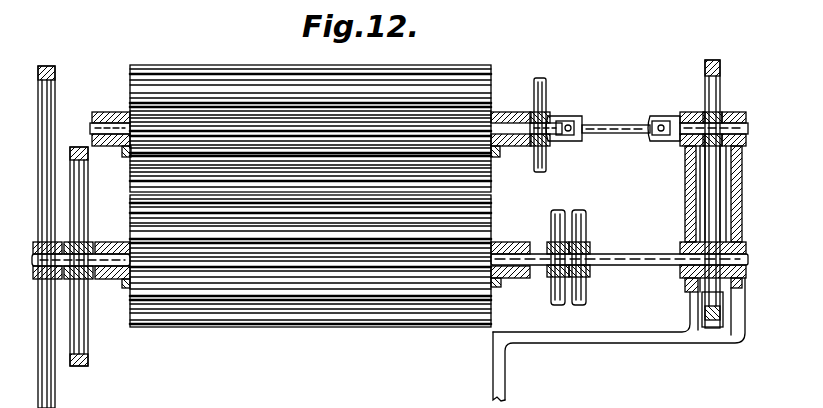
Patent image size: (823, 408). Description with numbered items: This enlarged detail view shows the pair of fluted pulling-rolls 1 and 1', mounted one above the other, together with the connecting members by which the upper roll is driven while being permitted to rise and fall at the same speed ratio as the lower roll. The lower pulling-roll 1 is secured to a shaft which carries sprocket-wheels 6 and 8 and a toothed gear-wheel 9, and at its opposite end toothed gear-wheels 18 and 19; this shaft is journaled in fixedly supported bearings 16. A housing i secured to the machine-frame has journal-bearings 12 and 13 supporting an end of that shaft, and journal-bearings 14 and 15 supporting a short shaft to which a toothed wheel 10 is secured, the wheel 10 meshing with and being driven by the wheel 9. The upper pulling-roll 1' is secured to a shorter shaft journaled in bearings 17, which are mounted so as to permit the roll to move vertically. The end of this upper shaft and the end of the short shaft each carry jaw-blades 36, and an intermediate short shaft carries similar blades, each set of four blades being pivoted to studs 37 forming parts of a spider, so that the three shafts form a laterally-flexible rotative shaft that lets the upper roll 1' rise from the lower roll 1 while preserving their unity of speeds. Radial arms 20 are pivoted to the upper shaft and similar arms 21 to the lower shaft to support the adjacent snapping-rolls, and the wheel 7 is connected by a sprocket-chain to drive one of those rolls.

The pulling-roll 1 is at (310, 210).
The pulling-roll 1' is at (167, 48).
The sprocket-wheel 6 is at (586, 218).
The wheel 7 is at (548, 165).
The sprocket-wheel 8 is at (553, 215).
The toothed gear-wheel 9 is at (722, 316).
The toothed wheel 10 is at (722, 72).
The journal-bearing 12 is at (680, 272).
The journal-bearing 13 is at (750, 268).
The journal-bearing 14 is at (690, 110).
The journal-bearing 15 is at (734, 111).
The bearing 16 is at (107, 279).
The bearing 17 is at (100, 110).
The toothed gear-wheel 18 is at (90, 365).
The toothed gear-wheel 19 is at (62, 404).
The radial arm 20 is at (125, 157).
The arm 21 is at (128, 243).
The jaw-blade 36 is at (563, 141).
The stud 37 is at (574, 124).
The housing i is at (610, 343).